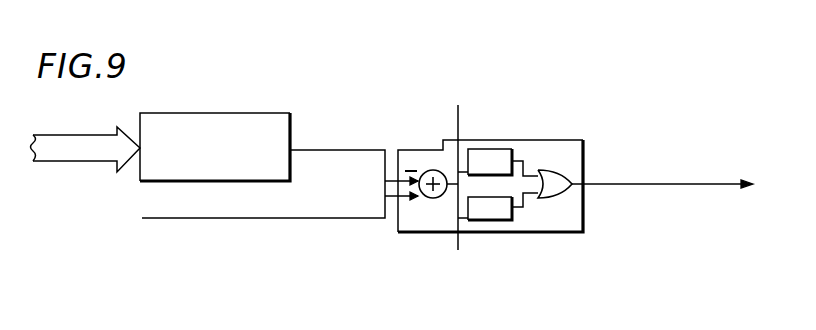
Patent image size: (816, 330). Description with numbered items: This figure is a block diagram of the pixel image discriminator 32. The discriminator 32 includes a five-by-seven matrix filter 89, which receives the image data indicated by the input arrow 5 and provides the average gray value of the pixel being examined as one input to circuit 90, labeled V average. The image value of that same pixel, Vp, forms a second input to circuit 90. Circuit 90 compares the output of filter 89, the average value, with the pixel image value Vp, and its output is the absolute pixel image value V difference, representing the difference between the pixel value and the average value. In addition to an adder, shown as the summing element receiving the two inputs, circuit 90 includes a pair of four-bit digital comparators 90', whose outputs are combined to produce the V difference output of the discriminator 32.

The sensor input signal 5 is at (43, 173).
The discriminator 32 is at (296, 80).
The matrix filter 89 is at (264, 94).
The circuit 90 is at (490, 183).
The digital comparators 90' is at (524, 186).